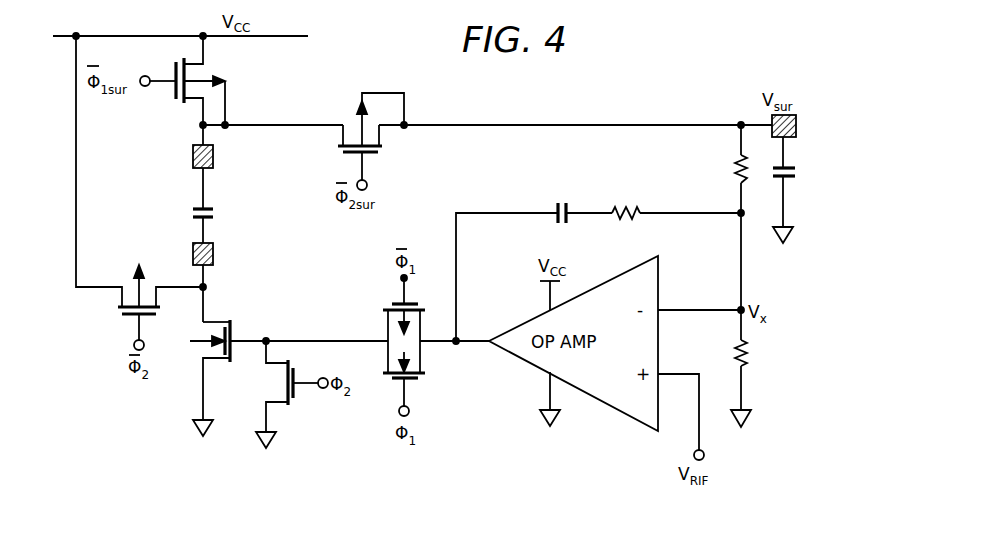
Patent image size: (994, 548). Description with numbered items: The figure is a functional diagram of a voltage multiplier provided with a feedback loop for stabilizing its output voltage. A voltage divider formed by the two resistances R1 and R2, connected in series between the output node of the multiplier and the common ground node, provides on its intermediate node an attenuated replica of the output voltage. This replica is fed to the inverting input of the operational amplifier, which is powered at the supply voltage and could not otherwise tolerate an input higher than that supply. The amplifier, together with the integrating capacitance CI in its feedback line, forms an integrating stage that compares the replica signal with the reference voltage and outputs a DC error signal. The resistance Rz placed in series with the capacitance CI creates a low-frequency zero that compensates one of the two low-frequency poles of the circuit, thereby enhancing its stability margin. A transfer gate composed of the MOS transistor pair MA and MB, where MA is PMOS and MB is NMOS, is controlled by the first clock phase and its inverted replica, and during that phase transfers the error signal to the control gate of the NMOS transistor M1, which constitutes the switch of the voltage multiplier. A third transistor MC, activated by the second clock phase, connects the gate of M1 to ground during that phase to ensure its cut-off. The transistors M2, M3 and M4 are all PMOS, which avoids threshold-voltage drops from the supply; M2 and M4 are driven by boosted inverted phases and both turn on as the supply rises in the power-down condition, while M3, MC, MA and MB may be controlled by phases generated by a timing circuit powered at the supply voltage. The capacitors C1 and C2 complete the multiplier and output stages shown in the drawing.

The NMOS transistor M1 is at (201, 377).
The PMOS transistor M2 is at (186, 80).
The PMOS transistor M3 is at (146, 307).
The PMOS transistor M4 is at (366, 141).
The PMOS transistor of transfer gate MA is at (394, 308).
The NMOS transistor of transfer gate MB is at (415, 378).
The third MOS transistor MC is at (286, 394).
The capacitor C1 is at (215, 217).
The capacitor C2 is at (796, 190).
The integrating capacitance CI is at (560, 200).
The resistance of voltage divider R1 is at (749, 383).
The resistance of voltage divider R2 is at (726, 232).
The resistance in series with integrating capacitance Rz is at (626, 198).